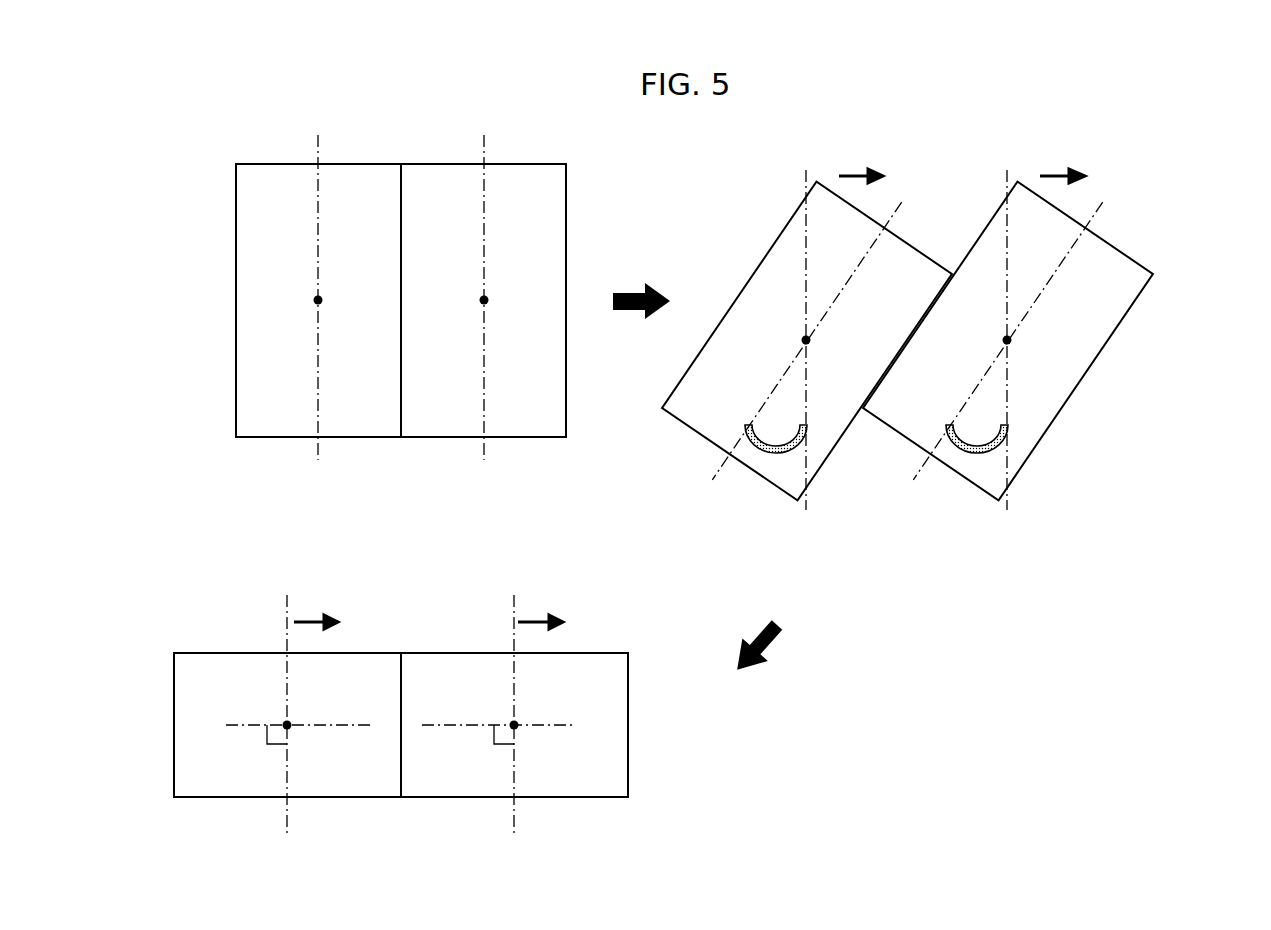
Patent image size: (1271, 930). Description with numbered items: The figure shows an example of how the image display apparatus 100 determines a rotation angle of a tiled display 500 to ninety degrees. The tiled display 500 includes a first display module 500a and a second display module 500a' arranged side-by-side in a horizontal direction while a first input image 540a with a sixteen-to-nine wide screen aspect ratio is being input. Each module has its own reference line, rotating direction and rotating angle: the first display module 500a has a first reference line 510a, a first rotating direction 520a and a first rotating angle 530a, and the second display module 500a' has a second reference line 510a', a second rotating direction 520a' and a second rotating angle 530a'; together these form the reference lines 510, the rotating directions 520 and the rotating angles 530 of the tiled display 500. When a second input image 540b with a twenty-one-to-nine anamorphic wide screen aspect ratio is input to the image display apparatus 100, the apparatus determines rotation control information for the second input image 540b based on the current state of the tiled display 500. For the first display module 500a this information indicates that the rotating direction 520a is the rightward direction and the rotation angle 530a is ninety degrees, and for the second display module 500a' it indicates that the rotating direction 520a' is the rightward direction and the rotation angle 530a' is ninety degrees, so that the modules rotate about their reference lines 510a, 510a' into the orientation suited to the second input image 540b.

The image display apparatus 100 is at (697, 461).
The tiled display 500 is at (530, 118).
The first display module 500a is at (563, 460).
The second display module 500a' is at (777, 460).
The reference lines 510 is at (323, 527).
The first reference line 510a is at (324, 328).
The second reference line 510a' is at (492, 328).
The rotating directions 520 is at (1058, 118).
The first rotating direction 520a is at (806, 319).
The second rotating direction 520a' is at (1007, 319).
The rotating angles 530 is at (963, 537).
The first rotating angle 530a is at (776, 479).
The second rotating angle 530a' is at (976, 479).
The first input image 540a is at (392, 278).
The second input image 540b is at (390, 737).